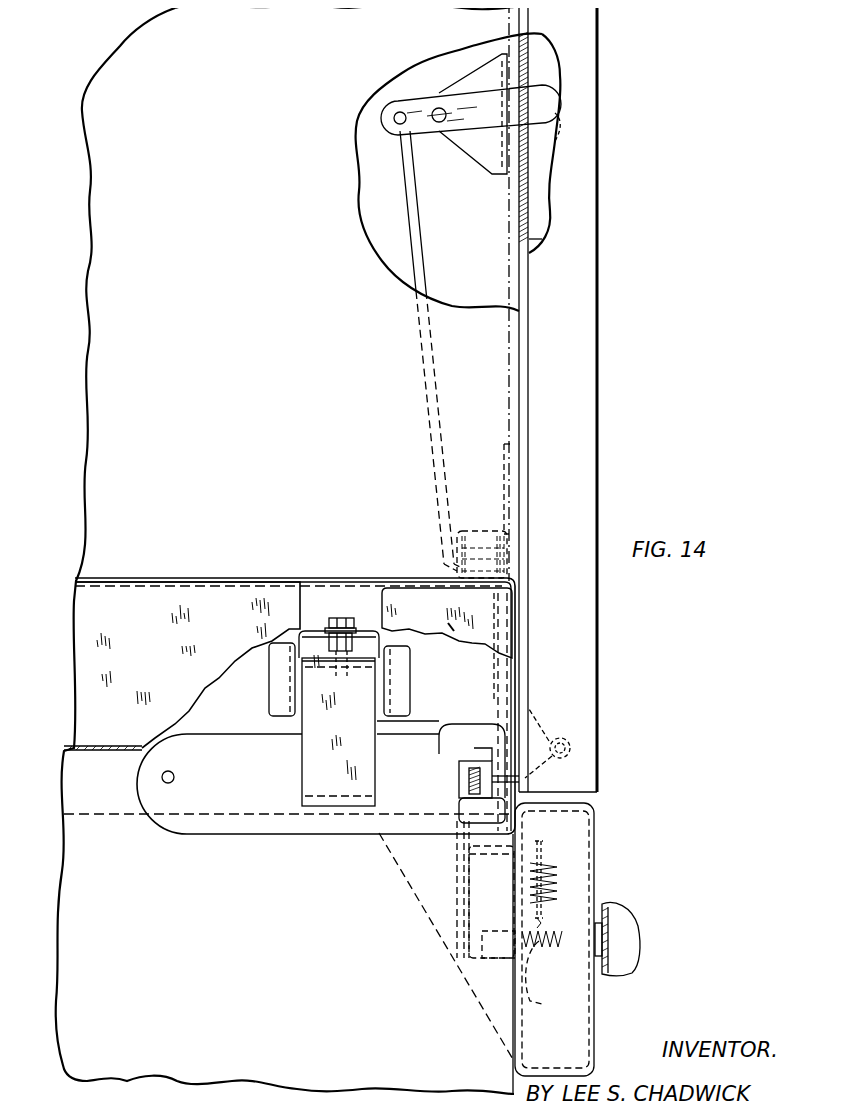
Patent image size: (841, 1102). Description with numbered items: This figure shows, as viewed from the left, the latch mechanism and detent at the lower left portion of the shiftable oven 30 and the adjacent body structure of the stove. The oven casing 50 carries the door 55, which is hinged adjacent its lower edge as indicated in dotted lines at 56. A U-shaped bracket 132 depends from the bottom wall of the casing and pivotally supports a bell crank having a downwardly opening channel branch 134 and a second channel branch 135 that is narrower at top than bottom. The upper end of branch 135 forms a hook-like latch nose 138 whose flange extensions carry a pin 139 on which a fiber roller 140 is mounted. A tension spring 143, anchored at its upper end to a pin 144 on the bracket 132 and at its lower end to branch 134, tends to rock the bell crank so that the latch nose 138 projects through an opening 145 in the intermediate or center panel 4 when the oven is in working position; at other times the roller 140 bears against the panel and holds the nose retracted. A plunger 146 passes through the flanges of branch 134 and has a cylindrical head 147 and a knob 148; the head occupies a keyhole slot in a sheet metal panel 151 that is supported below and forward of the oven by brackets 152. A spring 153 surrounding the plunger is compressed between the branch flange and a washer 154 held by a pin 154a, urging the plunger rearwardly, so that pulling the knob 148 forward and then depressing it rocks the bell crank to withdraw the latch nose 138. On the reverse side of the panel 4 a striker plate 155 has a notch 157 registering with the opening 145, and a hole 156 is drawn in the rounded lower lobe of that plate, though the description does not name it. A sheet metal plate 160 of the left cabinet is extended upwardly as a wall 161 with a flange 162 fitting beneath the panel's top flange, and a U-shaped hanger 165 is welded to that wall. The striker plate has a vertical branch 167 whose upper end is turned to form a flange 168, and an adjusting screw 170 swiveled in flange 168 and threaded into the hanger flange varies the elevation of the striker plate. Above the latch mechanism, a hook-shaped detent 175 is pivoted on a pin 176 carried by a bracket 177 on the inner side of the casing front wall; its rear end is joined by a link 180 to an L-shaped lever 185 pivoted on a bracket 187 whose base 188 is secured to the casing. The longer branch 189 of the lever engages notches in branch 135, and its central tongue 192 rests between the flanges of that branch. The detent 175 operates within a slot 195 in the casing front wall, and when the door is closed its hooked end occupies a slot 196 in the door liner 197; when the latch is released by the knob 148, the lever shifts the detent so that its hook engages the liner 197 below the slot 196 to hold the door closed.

The shiftable oven 30 is at (210, 272).
The intermediate or center panel 4 is at (303, 592).
The casing 50 is at (527, 297).
The door 55 is at (578, 470).
The hinge connection 56 is at (563, 733).
The bracket 132 is at (593, 812).
The branch 134 is at (540, 917).
The branch 135 is at (487, 865).
The latch nose 138 is at (487, 786).
The pin 139 is at (487, 778).
The roller 140 is at (465, 788).
The tension spring 143 is at (556, 868).
The pin 144 is at (541, 842).
The opening 145 is at (490, 770).
The plunger 146 is at (497, 957).
The cylindrical head 147 is at (590, 980).
The knob 148 is at (637, 943).
The sheet metal panel 151 is at (593, 1017).
The brackets 152 is at (433, 935).
The spring 153 is at (533, 963).
The washer 154 is at (525, 993).
The pin 154a is at (510, 957).
The striker plate 155 is at (407, 740).
The pivot hole 156 is at (158, 780).
The notch 157 is at (458, 773).
The sheet metal plate 160 is at (125, 733).
The wall 161 is at (536, 617).
The flange 162 is at (190, 562).
The U-shaped hanger 165 is at (320, 783).
The vertical branch 167 is at (297, 692).
The flange 168 is at (362, 630).
The adjusting screw 170 is at (340, 617).
The detent 175 is at (548, 97).
The pin 176 is at (437, 128).
The bracket 177 is at (495, 167).
The link 180 is at (412, 248).
The L-shaped lever 185 is at (450, 627).
The bracket 187 is at (472, 530).
The base 188 is at (505, 467).
The longer branch 189 is at (455, 690).
The central tongue 192 is at (472, 757).
The slot 195 is at (540, 137).
The slot 196 is at (522, 80).
The door liner 197 is at (540, 238).